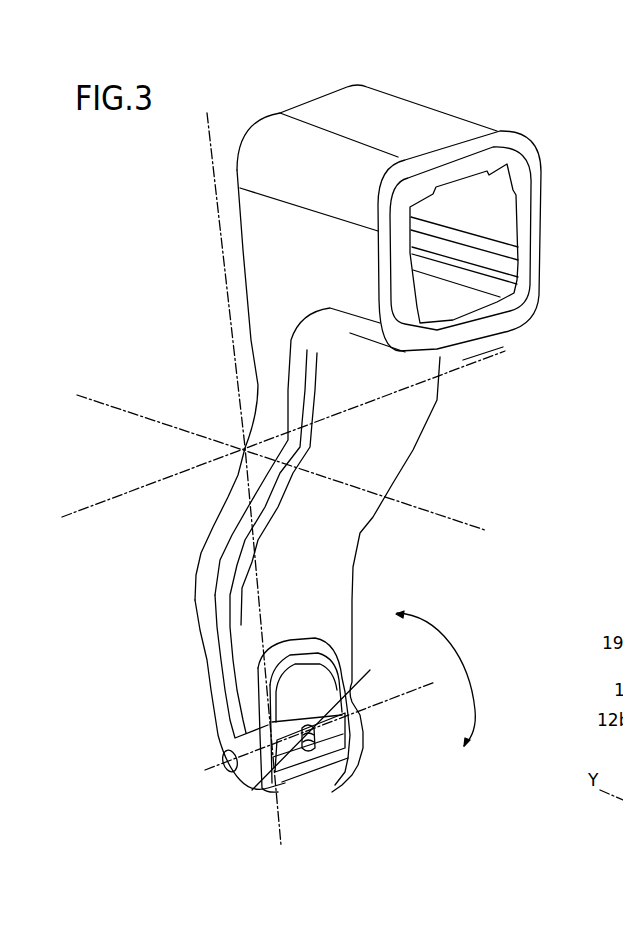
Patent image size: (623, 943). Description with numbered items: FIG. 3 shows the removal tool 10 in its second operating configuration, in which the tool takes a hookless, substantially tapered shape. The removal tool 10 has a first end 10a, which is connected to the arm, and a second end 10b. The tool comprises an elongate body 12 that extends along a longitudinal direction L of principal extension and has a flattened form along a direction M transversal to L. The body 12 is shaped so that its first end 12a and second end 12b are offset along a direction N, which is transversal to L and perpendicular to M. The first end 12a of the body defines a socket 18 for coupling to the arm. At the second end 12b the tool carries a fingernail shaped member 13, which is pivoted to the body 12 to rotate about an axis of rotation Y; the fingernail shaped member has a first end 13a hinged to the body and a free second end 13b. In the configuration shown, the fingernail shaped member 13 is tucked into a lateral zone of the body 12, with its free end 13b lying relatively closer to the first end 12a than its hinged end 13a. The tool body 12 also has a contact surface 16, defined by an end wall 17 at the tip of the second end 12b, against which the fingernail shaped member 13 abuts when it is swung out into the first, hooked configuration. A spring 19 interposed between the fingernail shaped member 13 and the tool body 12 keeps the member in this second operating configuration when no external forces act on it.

The removal tool 10 is at (480, 403).
The first end 10a is at (290, 233).
The second end 10b is at (227, 718).
The elongate body 12 is at (360, 466).
The first end 12a is at (385, 124).
The second end 12b is at (213, 692).
The fingernail shaped member 13 is at (305, 687).
The first end 13a is at (338, 735).
The free second end 13b is at (303, 660).
The contact surface 16 is at (320, 763).
The end wall 17 is at (298, 783).
The socket 18 is at (478, 221).
The spring 19 is at (252, 790).
The longitudinal direction L is at (213, 178).
The direction N is at (93, 400).
The direction M is at (83, 509).
The axis of rotation Y is at (205, 770).